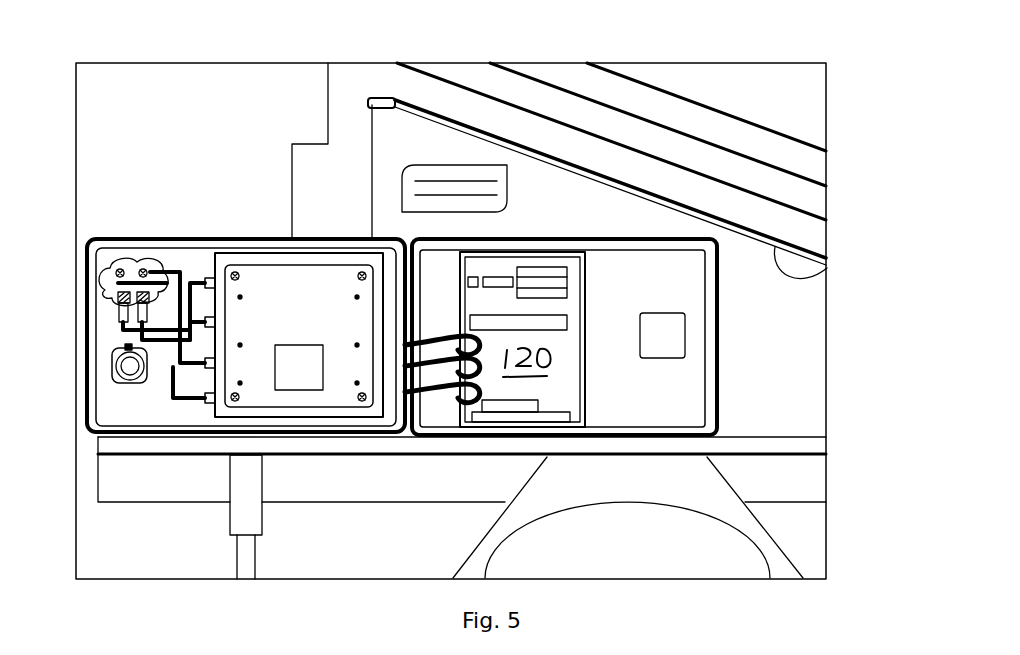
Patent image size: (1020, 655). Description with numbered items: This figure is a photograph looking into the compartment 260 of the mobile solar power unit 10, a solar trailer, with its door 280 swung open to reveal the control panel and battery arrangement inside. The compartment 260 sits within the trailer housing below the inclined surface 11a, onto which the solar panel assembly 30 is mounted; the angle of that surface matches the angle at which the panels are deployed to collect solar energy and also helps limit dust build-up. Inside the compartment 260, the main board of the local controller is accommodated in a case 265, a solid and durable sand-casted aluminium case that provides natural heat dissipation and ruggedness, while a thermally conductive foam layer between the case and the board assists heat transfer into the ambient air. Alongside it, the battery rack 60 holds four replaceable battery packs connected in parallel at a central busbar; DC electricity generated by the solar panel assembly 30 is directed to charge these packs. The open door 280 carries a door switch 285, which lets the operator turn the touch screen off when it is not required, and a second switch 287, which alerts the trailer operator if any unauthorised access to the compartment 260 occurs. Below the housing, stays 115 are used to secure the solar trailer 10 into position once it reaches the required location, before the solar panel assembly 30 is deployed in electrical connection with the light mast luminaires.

The mobile solar power unit 10 is at (832, 430).
The solar panel assembly 30 is at (806, 108).
The inclined surface 11a is at (810, 280).
The stays 115 is at (230, 527).
The door 280 is at (113, 397).
The door switch 285 is at (112, 306).
The second switch 287 is at (128, 346).
The case 265 is at (236, 384).
The compartment 260 is at (736, 310).
The battery rack 60 is at (687, 375).